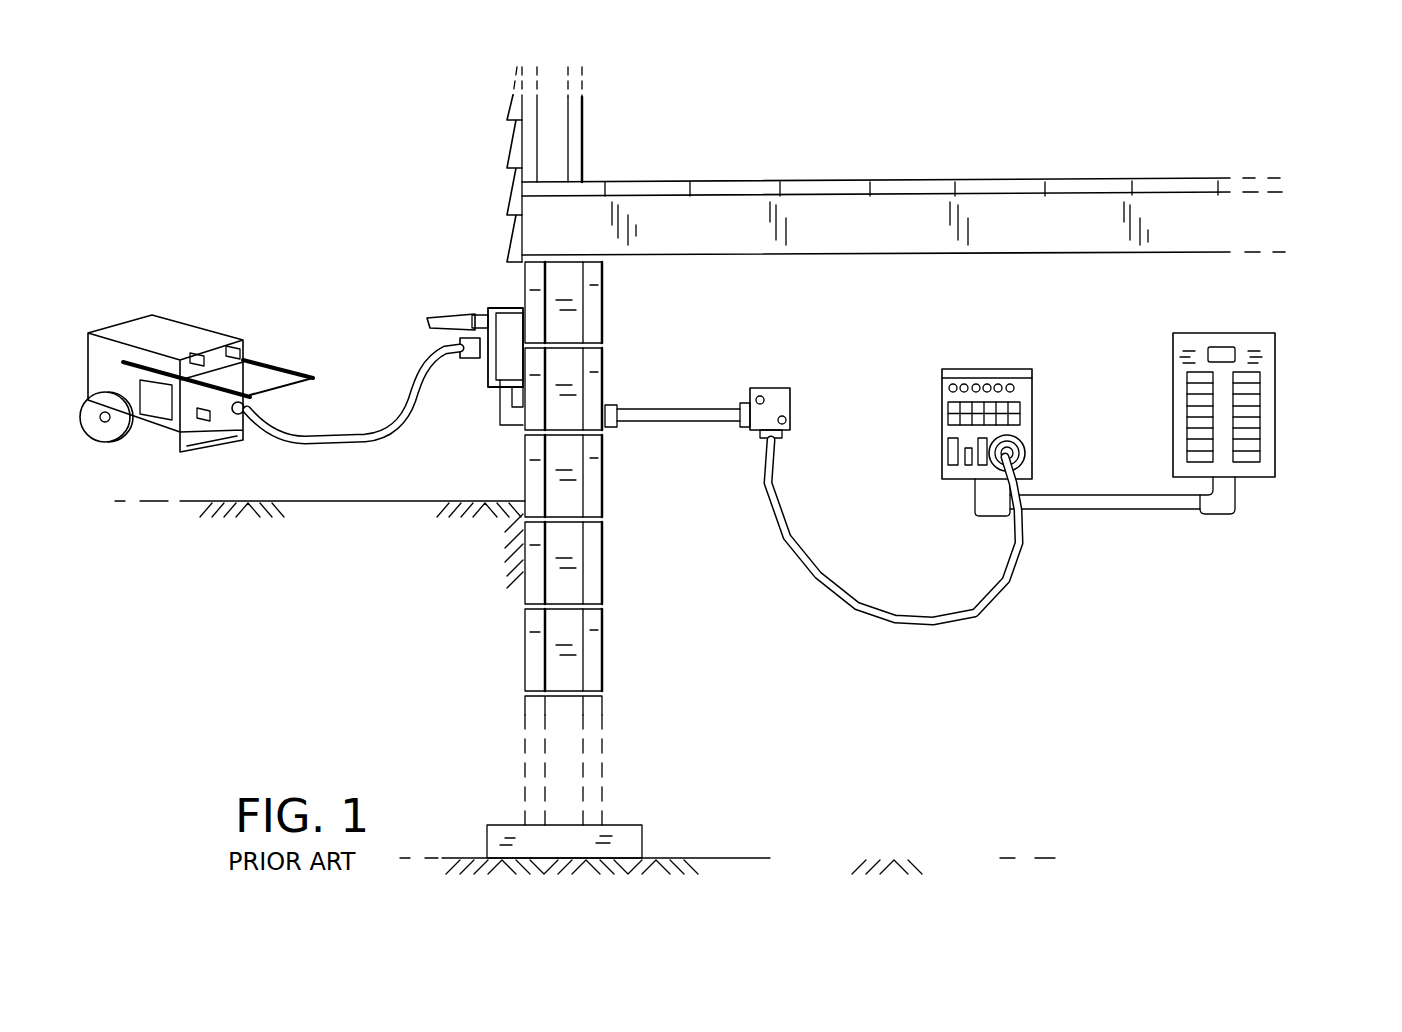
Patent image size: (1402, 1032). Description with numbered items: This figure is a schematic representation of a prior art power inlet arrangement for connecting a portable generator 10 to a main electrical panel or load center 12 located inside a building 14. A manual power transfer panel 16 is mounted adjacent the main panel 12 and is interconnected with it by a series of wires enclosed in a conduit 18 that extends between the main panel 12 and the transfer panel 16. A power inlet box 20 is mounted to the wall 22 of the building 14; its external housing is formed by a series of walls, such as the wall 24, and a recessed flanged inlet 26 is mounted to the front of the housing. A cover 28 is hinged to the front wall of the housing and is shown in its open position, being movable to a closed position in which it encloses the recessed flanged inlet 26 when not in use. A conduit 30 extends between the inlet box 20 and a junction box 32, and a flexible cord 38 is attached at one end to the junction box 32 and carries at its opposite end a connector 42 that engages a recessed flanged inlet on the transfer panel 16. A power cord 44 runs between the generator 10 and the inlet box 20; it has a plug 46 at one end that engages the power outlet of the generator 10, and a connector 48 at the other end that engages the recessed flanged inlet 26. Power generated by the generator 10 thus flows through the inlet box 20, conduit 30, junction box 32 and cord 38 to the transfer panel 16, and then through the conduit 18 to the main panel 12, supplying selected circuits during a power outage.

The portable generator 10 is at (245, 244).
The main electrical panel 12 is at (1304, 354).
The building 14 is at (446, 118).
The manual power transfer panel 16 is at (1021, 379).
The conduit 18 is at (1150, 518).
The power inlet box 20 is at (459, 274).
The wall 22 is at (520, 455).
The wall of housing 24 is at (505, 372).
The recessed flanged inlet 26 is at (486, 372).
The cover 28 is at (440, 316).
The conduit 30 is at (647, 405).
The junction box 32 is at (770, 388).
The flexible cord 38 is at (925, 628).
The connector 42 is at (1030, 440).
The power cord 44 is at (337, 448).
The plug 46 is at (245, 406).
The connector 48 is at (466, 360).